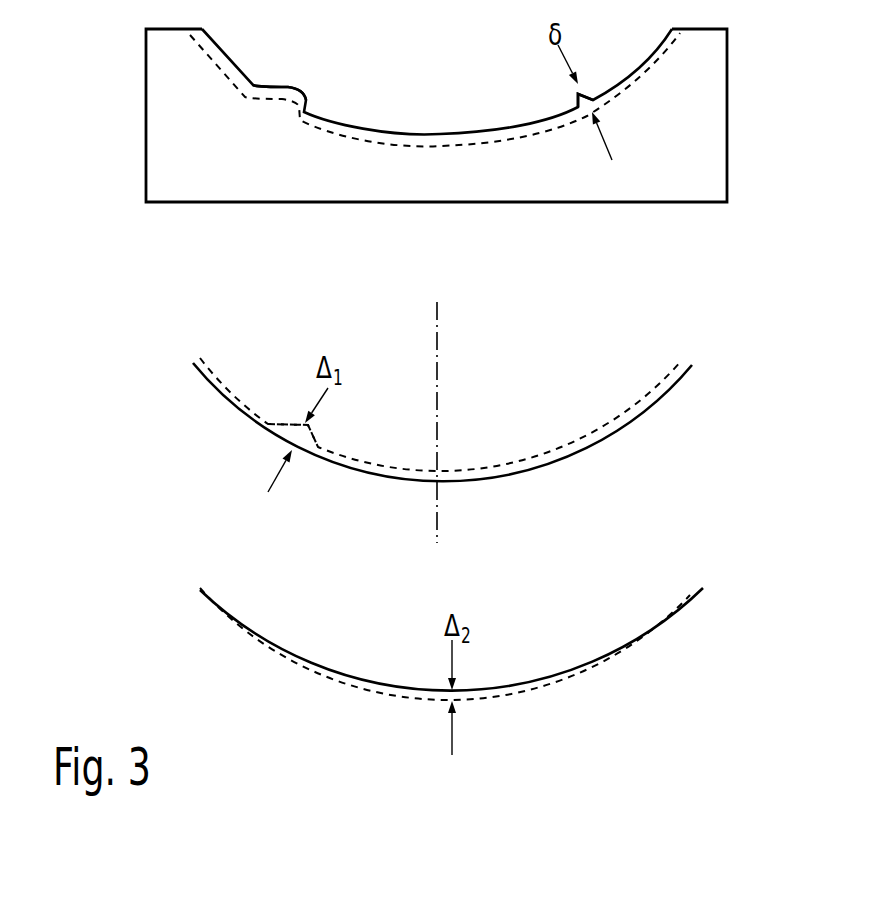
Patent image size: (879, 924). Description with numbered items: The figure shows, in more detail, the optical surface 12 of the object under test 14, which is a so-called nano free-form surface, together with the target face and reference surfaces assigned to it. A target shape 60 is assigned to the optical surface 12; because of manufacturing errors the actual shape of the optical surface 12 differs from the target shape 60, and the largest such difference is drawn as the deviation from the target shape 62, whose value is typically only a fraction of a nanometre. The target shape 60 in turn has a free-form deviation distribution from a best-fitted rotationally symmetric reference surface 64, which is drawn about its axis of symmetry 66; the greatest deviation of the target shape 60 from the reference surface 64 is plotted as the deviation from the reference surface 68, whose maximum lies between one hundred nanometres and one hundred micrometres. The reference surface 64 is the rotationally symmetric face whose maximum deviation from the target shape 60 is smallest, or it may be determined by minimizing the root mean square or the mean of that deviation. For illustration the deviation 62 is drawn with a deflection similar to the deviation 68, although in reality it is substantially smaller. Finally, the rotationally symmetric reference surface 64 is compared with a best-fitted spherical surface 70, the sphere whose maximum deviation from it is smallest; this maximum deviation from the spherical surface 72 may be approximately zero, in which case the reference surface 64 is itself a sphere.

The optical surface 12 is at (423, 121).
The object under test 14 is at (727, 115).
The target shape 60 is at (403, 146).
The deviation from the target shape 62 is at (590, 97).
The rotationally symmetric reference surface 64 is at (617, 441).
The axis of symmetry 66 is at (438, 368).
The deviation from the reference surface 68 is at (292, 86).
The best-fitted spherical surface 70 is at (531, 683).
The maximum deviation from the spherical surface 72 is at (431, 717).